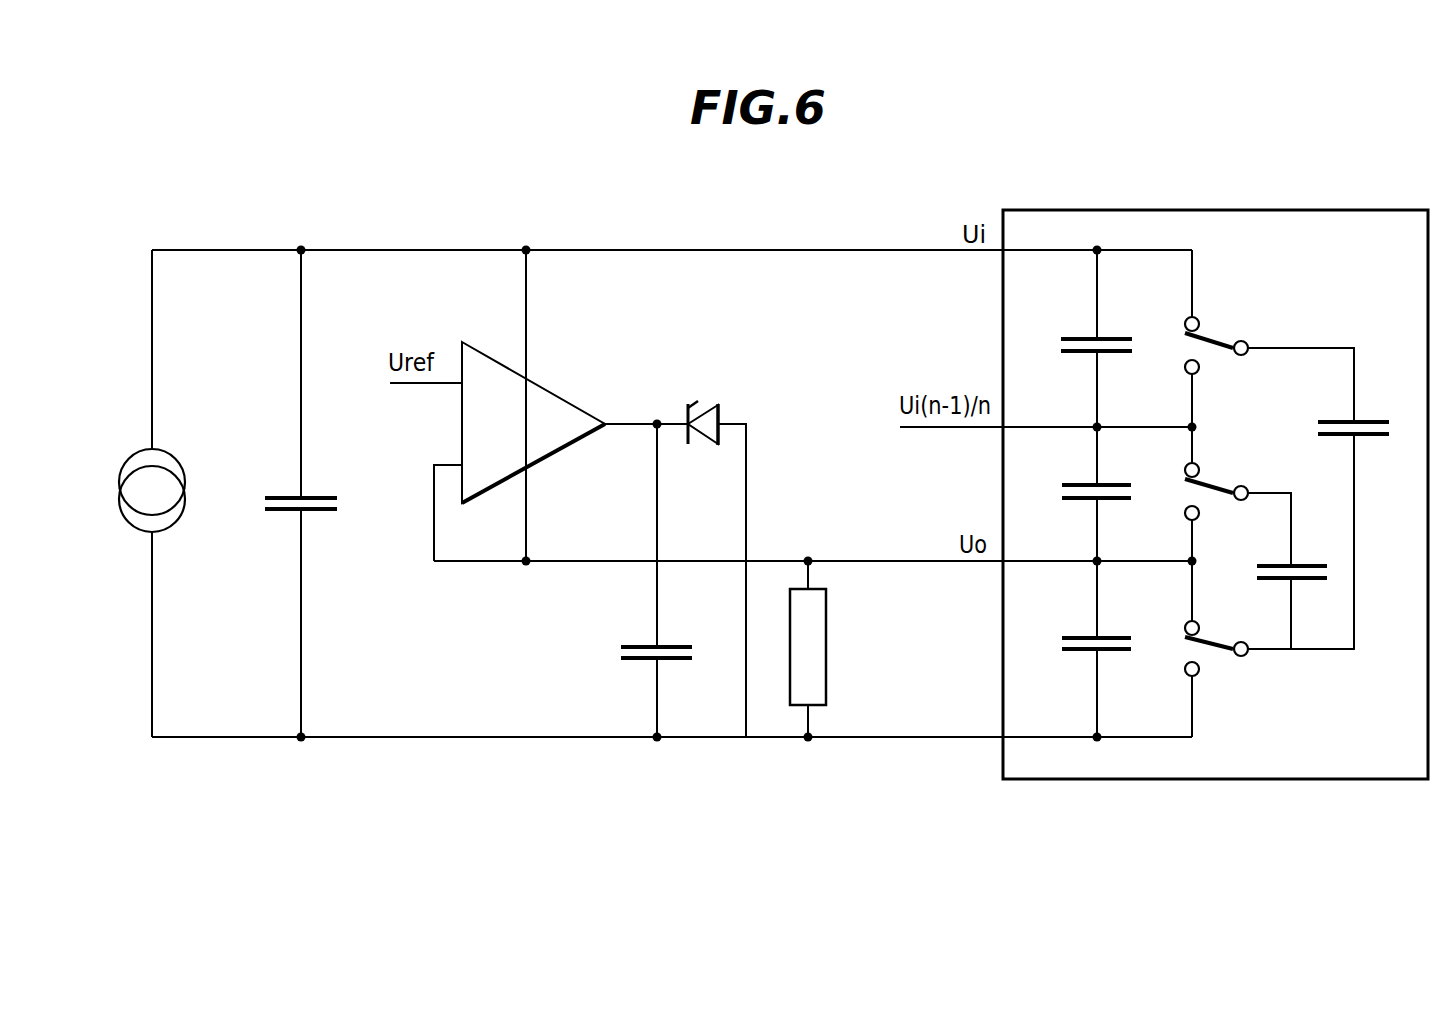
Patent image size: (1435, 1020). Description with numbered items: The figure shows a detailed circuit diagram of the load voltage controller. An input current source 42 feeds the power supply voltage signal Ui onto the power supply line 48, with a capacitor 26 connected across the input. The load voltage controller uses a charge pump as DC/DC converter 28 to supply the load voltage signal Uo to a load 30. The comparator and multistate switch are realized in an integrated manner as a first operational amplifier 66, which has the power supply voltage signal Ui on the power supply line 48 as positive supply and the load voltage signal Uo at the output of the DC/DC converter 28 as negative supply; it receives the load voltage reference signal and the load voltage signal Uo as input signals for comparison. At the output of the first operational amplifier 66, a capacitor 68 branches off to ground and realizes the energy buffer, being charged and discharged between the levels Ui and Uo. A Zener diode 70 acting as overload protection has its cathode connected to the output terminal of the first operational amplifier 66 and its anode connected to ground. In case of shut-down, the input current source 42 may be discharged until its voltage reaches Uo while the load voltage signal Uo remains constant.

The input capacitor 26 is at (280, 495).
The DC/DC converter 28 is at (1388, 209).
The load 30 is at (827, 617).
The input current source 42 is at (178, 452).
The power supply line 48 is at (730, 232).
The first operational amplifier 66 is at (553, 390).
The capacitor 68 is at (628, 645).
The Zener diode 70 is at (722, 402).